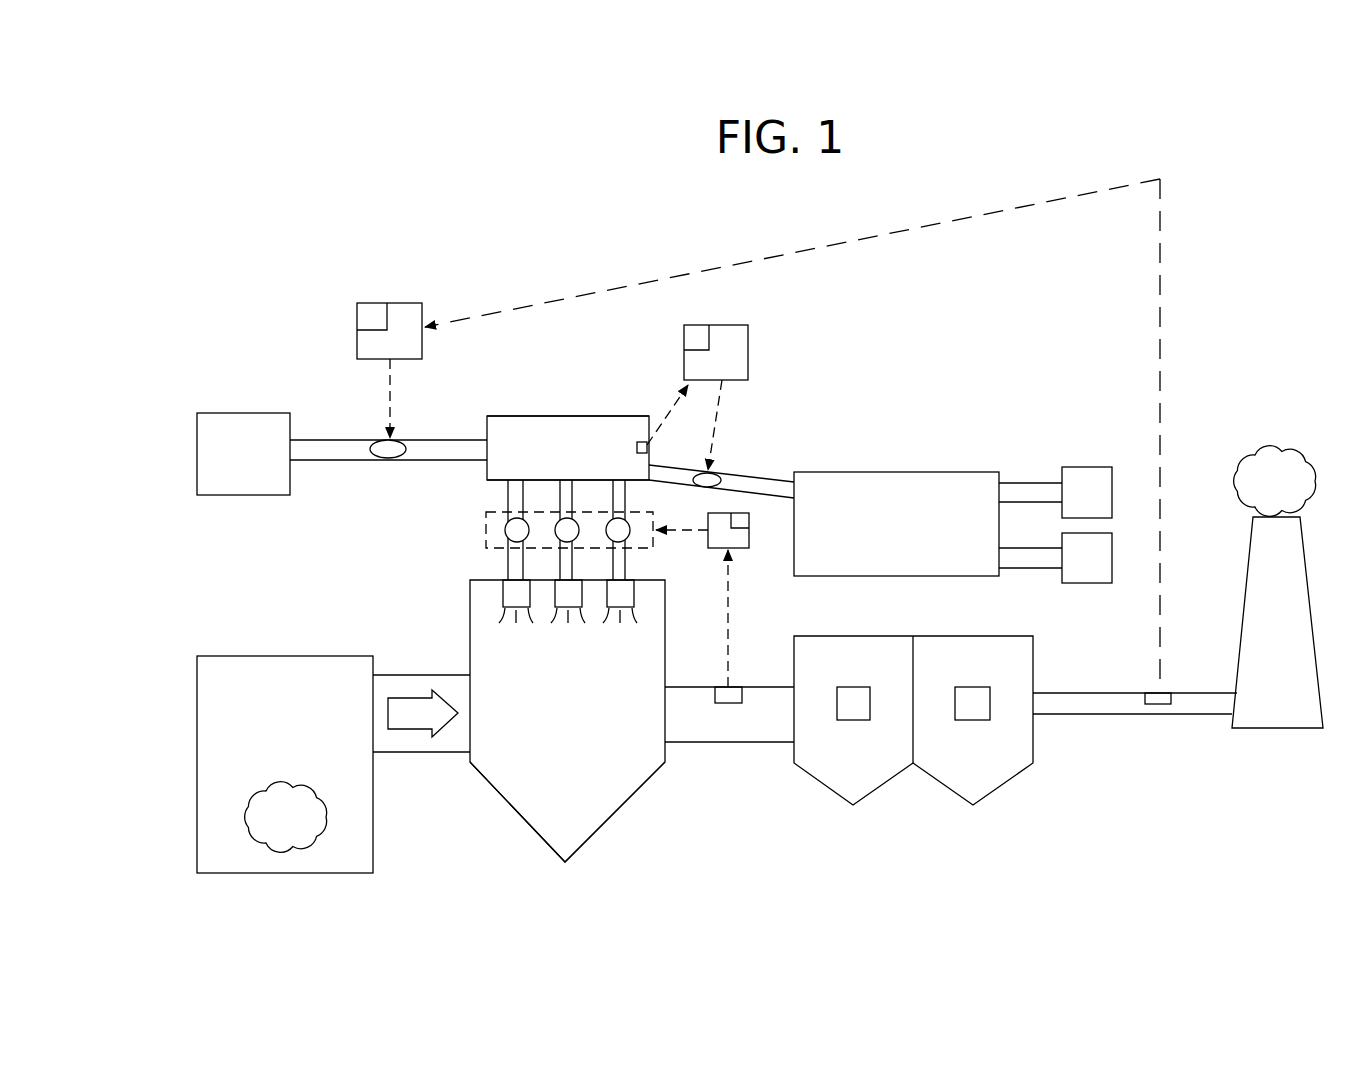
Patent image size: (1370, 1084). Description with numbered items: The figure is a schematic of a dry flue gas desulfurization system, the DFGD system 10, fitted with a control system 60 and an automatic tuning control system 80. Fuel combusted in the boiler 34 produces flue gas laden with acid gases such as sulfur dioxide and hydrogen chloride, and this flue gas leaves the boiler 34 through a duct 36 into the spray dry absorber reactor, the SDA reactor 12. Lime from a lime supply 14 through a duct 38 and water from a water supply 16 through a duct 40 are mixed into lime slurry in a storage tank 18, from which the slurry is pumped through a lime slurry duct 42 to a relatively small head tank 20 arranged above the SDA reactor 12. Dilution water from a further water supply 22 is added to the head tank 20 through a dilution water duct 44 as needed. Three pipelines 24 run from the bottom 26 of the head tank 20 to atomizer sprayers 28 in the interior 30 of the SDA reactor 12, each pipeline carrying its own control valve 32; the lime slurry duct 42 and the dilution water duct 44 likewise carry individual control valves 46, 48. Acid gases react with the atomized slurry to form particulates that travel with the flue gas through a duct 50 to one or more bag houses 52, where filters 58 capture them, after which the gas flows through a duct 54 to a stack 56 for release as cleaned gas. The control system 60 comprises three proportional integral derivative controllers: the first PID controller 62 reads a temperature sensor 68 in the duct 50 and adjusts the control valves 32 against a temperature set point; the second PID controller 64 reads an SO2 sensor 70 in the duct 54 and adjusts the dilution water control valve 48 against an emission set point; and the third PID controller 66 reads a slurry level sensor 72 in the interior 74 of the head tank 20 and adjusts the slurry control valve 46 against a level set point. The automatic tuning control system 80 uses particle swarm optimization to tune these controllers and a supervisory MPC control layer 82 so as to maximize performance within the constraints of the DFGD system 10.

The DFGD system 10 is at (302, 348).
The SDA reactor 12 is at (470, 640).
The lime supply 14 is at (1082, 468).
The water supply 16 is at (1075, 585).
The storage tank 18 is at (905, 472).
The head tank 20 is at (583, 415).
The water supply 22 is at (262, 495).
The pipelines 24 is at (616, 494).
The bottom 26 is at (545, 485).
The atomizer sprayer 28 is at (512, 592).
The interior 30 is at (600, 776).
The control valve 32 is at (516, 522).
The boiler 34 is at (228, 685).
The duct 36 is at (425, 752).
The duct 38 is at (1033, 483).
The duct 40 is at (1008, 548).
The lime slurry duct 42 is at (750, 470).
The dilution water duct 44 is at (442, 440).
The control valve 46 is at (700, 487).
The control valve 48 is at (384, 456).
The duct 50 is at (695, 725).
The bag houses 52 is at (868, 770).
The duct 54 is at (1085, 718).
The stack 56 is at (1243, 640).
The filters 58 is at (855, 687).
The control system 60 is at (1197, 274).
The first PID controller 62 is at (752, 535).
The second PID controller 64 is at (400, 315).
The third PID controller 66 is at (750, 358).
The temperature sensor 68 is at (735, 690).
The SO2 sensor 70 is at (1150, 693).
The slurry level sensor 72 is at (640, 442).
The interior 74 is at (507, 436).
The automatic tuning control system 80 is at (884, 394).
The supervisory MPC control layer 82 is at (360, 318).